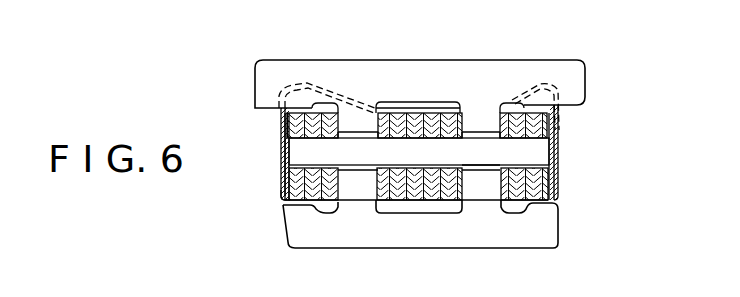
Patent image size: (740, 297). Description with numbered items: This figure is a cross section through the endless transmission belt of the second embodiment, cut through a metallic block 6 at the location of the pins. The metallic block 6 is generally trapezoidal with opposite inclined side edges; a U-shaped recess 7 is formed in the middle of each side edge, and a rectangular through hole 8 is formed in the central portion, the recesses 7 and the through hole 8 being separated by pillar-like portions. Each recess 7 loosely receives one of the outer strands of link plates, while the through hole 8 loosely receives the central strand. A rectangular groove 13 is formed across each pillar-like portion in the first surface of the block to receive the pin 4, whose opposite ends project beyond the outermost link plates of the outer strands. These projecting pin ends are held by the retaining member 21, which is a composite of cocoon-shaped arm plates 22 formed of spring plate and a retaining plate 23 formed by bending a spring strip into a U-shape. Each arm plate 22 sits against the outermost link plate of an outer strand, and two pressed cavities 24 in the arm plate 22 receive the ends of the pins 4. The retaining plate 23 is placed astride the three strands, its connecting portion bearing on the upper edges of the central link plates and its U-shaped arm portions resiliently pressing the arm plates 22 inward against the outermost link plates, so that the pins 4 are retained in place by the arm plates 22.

The pin 4 is at (300, 159).
The second metallic block 6 is at (414, 59).
The recess 7 is at (326, 102).
The through hole 8 is at (428, 205).
The rectangular groove 13 is at (488, 172).
The retaining member 21 is at (277, 191).
The arm plate 22 is at (558, 113).
The retaining plate 23 is at (428, 102).
The cavity 24 is at (558, 150).